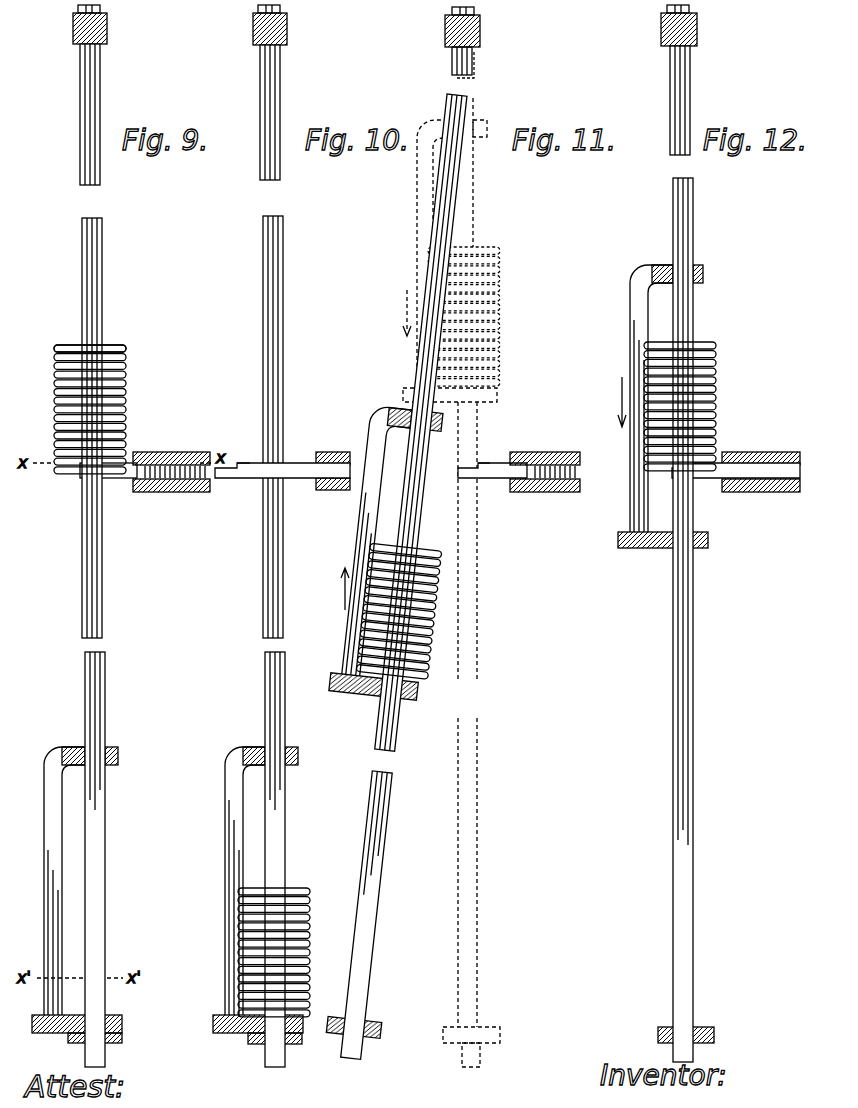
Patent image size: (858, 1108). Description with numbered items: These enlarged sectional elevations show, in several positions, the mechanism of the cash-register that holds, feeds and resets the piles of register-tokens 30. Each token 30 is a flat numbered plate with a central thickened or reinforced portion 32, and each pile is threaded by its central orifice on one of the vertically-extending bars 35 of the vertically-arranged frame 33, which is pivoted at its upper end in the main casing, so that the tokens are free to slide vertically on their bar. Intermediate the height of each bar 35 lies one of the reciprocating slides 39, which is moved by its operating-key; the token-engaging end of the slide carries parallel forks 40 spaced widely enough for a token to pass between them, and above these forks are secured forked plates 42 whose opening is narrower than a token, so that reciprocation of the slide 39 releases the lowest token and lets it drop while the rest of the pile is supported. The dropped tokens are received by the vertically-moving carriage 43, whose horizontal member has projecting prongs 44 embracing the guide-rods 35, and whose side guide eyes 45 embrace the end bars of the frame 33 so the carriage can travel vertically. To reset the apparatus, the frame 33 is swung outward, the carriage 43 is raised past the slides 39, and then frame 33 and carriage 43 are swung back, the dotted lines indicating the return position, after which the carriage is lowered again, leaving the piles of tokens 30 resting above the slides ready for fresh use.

In FIG. 9, the register-tokens 30 is at (107, 409).
In FIG. 10, the register-tokens 30 is at (290, 952).
In FIG. 11, the register-tokens 30 is at (409, 611).
In FIG. 12, the register-tokens 30 is at (696, 406).
In FIG. 9, the thickened portions 32 is at (58, 348).
In FIG. 9, the vertically-arranged frame 33 is at (107, 28).
In FIG. 10, the vertically-arranged frame 33 is at (287, 28).
In FIG. 11, the vertically-arranged frame 33 is at (482, 33).
In FIG. 12, the vertically-arranged frame 33 is at (697, 30).
In FIG. 9, the vertically-extending bars 35 is at (100, 100).
In FIG. 10, the vertically-extending bars 35 is at (280, 107).
In FIG. 11, the vertically-extending bars 35 is at (458, 182).
In FIG. 12, the vertically-extending bars 35 is at (672, 100).
In FIG. 9, the reciprocating slides 39 is at (187, 492).
In FIG. 10, the reciprocating slides 39 is at (295, 462).
In FIG. 11, the reciprocating slides 39 is at (523, 492).
In FIG. 12, the reciprocating slides 39 is at (707, 480).
In FIG. 10, the forks 40 is at (247, 473).
In FIG. 11, the forks 40 is at (490, 478).
In FIG. 12, the forks 40 is at (736, 470).
In FIG. 10, the forked plates 42 is at (247, 460).
In FIG. 11, the forked plates 42 is at (495, 462).
In FIG. 9, the vertically-moving carriage 43 is at (48, 868).
In FIG. 10, the vertically-moving carriage 43 is at (226, 880).
In FIG. 11, the vertically-moving carriage 43 is at (360, 519).
In FIG. 12, the vertically-moving carriage 43 is at (632, 358).
In FIG. 9, the projecting prongs 44 is at (120, 1018).
In FIG. 10, the projecting prongs 44 is at (302, 1033).
In FIG. 11, the projecting prongs 44 is at (412, 690).
In FIG. 12, the projecting prongs 44 is at (708, 540).
In FIG. 9, the guide eyes 45 is at (118, 753).
In FIG. 12, the guide eyes 45 is at (703, 272).